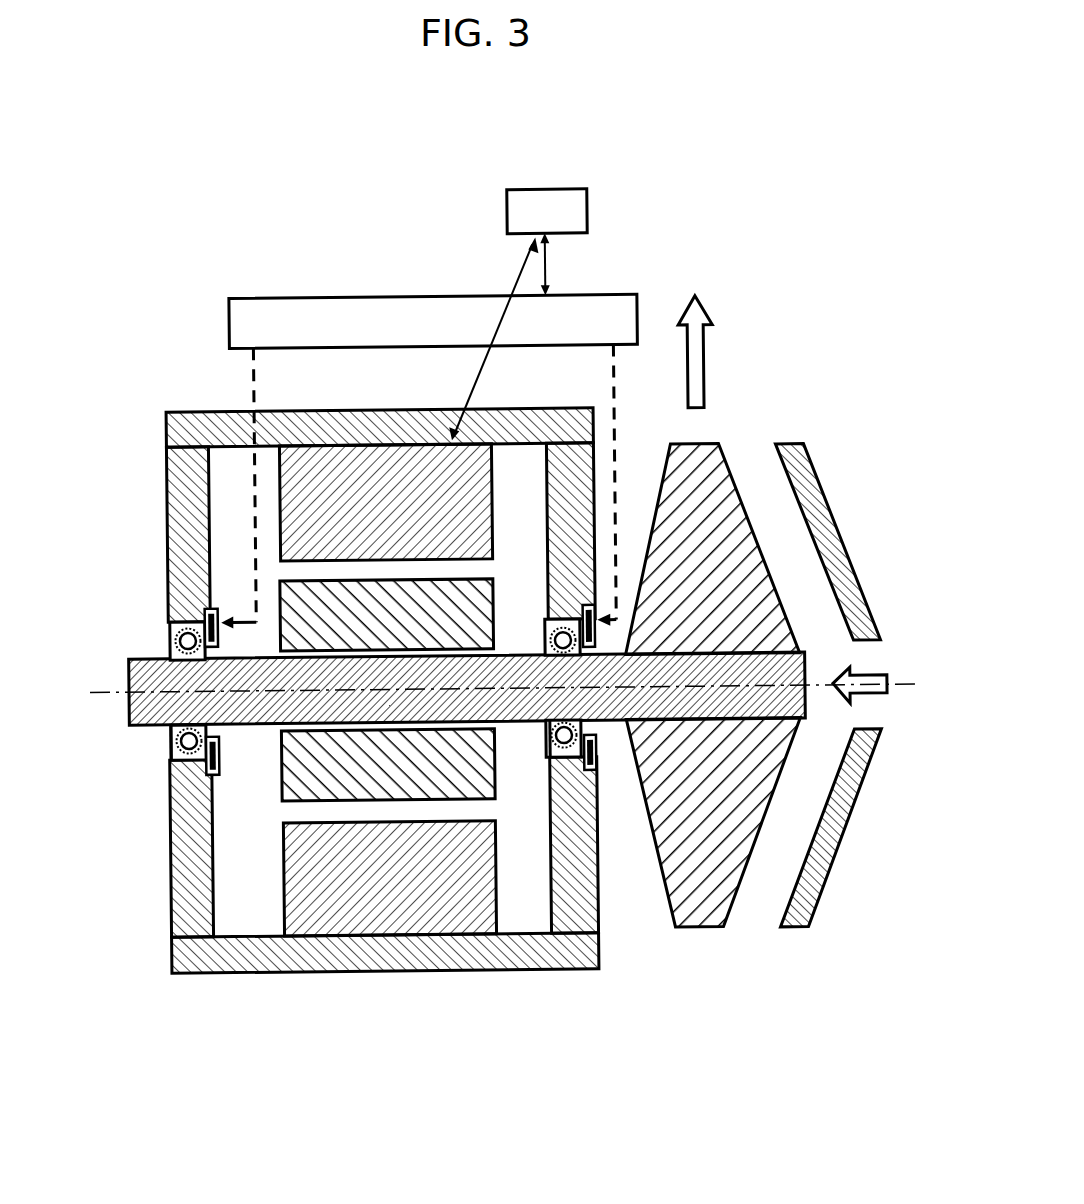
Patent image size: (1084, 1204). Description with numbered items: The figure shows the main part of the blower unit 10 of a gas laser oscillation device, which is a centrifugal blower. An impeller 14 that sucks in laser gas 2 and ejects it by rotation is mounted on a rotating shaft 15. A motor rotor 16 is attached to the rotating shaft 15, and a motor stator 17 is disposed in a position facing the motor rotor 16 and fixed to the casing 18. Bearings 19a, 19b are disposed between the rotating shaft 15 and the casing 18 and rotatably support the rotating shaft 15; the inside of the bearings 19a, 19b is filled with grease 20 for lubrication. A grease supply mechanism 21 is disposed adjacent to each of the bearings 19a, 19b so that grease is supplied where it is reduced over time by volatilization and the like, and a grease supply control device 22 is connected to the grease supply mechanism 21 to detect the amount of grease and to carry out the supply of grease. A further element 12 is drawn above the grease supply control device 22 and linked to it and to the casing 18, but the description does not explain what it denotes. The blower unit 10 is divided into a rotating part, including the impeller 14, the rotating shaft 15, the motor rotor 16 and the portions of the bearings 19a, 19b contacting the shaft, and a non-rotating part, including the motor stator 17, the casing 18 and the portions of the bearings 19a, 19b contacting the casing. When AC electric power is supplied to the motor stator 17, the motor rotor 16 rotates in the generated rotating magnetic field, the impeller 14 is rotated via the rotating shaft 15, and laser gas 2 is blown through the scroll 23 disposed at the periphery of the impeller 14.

The laser gas 2 is at (700, 372).
The blower unit 10 is at (806, 236).
The controller 12 is at (572, 218).
The impeller 14 is at (693, 872).
The rotating shaft 15 is at (477, 700).
The motor rotor 16 is at (389, 744).
The motor stator 17 is at (295, 868).
The casing 18 is at (577, 521).
The bearing 19a is at (566, 756).
The bearing 19b is at (189, 754).
The grease 20 is at (180, 642).
The grease supply mechanism 21 is at (205, 617).
The grease supply control device 22 is at (422, 312).
The scroll 23 is at (813, 924).